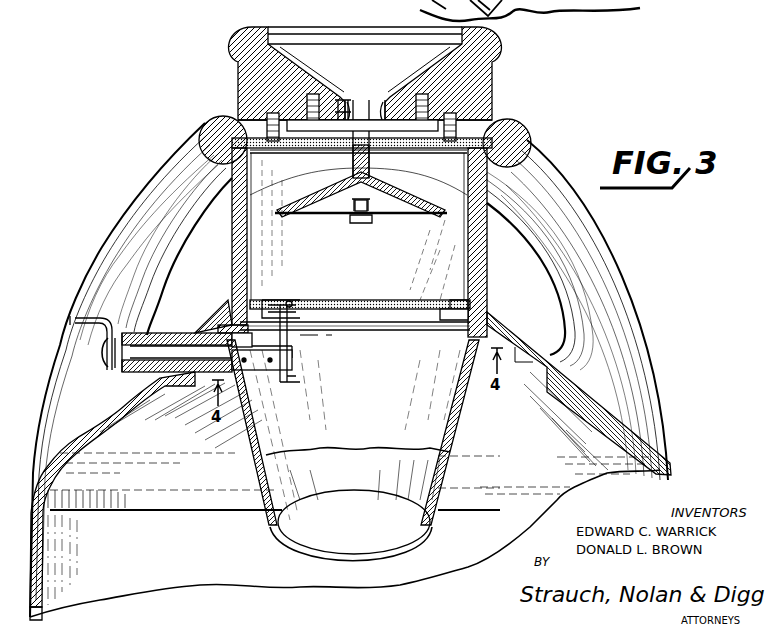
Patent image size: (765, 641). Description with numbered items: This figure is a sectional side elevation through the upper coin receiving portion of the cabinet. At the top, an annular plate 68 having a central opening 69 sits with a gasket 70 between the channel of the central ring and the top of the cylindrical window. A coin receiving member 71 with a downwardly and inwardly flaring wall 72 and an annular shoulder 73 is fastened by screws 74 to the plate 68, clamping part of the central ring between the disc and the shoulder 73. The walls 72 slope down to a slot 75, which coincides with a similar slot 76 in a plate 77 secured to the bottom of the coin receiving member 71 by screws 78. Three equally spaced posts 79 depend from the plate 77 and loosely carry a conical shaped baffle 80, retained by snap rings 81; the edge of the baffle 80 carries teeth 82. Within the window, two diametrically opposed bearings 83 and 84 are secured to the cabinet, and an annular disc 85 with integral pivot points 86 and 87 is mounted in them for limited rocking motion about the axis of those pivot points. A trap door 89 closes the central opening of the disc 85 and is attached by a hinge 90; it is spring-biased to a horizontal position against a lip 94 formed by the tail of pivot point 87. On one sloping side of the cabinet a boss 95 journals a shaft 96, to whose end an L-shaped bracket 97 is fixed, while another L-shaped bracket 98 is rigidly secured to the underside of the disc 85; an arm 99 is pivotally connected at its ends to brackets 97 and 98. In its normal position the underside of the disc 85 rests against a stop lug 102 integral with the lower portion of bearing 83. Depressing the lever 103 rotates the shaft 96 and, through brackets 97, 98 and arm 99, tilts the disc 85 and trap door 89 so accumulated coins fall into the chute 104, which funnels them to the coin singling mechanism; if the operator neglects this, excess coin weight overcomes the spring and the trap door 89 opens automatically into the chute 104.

The annular plate 68 is at (428, 148).
The central opening 69 is at (396, 148).
The gasket 70 is at (500, 129).
The coin receiving member 71 is at (489, 90).
The flaring wall 72 is at (296, 50).
The annular shoulder 73 is at (235, 118).
The screws 74 is at (452, 116).
The slot 75 is at (366, 104).
The slot 76 is at (350, 110).
The plate 77 is at (334, 145).
The screws 78 is at (333, 96).
The posts 79 is at (348, 212).
The conical shaped baffle 80 is at (380, 203).
The snap rings 81 is at (370, 223).
The teeth 82 is at (284, 216).
The bearing 83 is at (250, 300).
The bearing 84 is at (458, 300).
The annular disc 85 is at (278, 292).
The pivot point 86 is at (236, 310).
The pivot point 87 is at (453, 300).
The trap door 89 is at (346, 300).
The hinge 90 is at (290, 299).
The lip 94 is at (440, 302).
The boss 95 is at (143, 333).
The shaft 96 is at (152, 366).
The L-shaped bracket 97 is at (262, 362).
The L-shaped bracket 98 is at (249, 342).
The arm 99 is at (296, 340).
The stop lug 102 is at (225, 304).
The lever 103 is at (95, 318).
The chute 104 is at (478, 410).